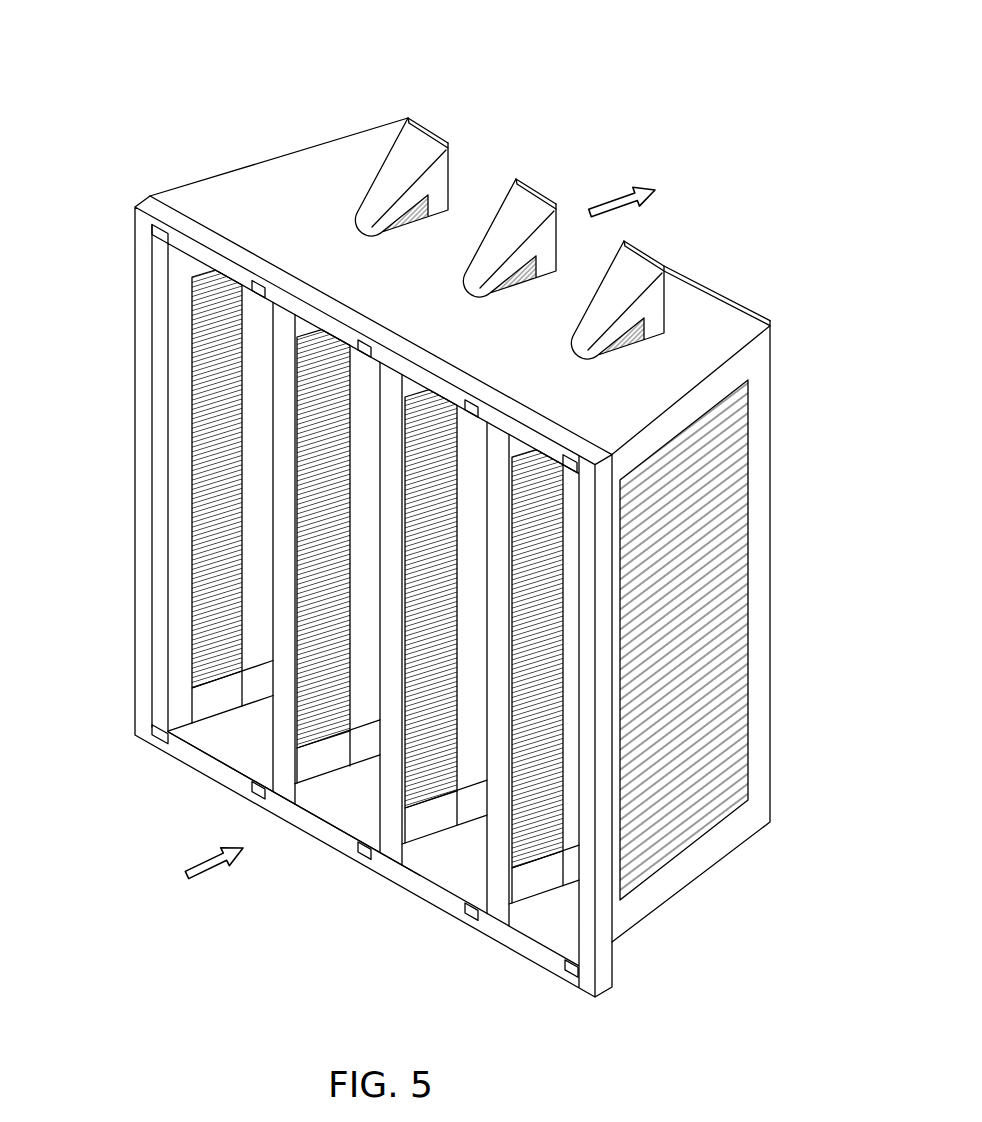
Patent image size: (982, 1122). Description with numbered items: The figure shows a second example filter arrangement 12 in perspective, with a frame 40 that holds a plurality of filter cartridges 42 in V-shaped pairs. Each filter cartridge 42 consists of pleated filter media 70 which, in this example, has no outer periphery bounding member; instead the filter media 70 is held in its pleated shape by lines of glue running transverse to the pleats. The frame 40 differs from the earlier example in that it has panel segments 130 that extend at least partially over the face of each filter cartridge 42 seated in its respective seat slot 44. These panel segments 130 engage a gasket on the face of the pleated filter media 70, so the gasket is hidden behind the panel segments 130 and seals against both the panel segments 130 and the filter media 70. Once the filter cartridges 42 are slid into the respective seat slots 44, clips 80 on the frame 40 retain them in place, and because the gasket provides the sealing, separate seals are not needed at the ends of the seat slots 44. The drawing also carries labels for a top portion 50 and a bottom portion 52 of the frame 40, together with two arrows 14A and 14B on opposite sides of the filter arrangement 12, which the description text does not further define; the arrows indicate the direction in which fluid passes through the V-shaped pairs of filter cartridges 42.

The filter arrangement 12 is at (264, 100).
The frame 40 is at (200, 183).
The top panel / bottom panel of frame 50 is at (336, 158).
The bottom rail 52 is at (225, 764).
The panel segments 130 is at (432, 178).
The clips 80 is at (158, 384).
The filter cartridges 42 is at (202, 658).
The filter media 70 is at (722, 580).
The seat slots 44 is at (438, 837).
The upstream airflow direction 14A is at (212, 870).
The downstream airflow direction 14B is at (618, 192).